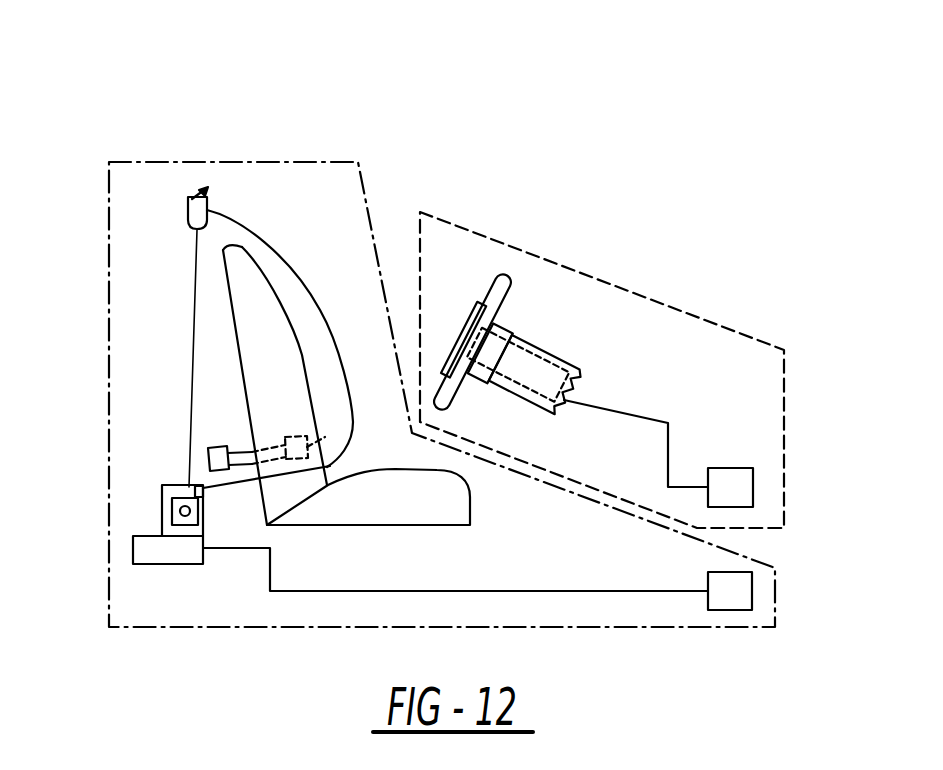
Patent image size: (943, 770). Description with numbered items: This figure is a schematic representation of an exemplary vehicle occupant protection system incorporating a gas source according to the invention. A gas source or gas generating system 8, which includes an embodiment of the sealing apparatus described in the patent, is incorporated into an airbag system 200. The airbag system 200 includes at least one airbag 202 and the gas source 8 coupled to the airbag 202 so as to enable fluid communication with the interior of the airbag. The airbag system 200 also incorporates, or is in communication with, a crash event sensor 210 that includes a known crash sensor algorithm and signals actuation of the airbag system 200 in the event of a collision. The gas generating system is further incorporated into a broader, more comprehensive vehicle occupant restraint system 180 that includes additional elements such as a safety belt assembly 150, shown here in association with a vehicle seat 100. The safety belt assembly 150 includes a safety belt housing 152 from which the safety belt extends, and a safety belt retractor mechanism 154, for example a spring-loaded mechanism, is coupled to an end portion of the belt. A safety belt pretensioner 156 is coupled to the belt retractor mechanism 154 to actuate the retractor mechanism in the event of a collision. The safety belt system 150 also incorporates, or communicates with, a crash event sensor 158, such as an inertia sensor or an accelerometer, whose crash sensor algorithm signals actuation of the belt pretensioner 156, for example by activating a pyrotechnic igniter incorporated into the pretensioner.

The safety belt assembly 150 is at (252, 150).
The seat 100 is at (282, 253).
The safety belt retractor mechanism 154 is at (162, 484).
The safety belt housing 152 is at (197, 513).
The safety belt pretensioner 156 is at (167, 550).
The crash event sensor 158 is at (733, 597).
The airbag system 200 is at (712, 308).
The vehicle occupant restraint system 180 is at (495, 156).
The airbag 202 is at (497, 329).
The gas generating system 8 is at (542, 363).
The crash event sensor 210 is at (737, 480).